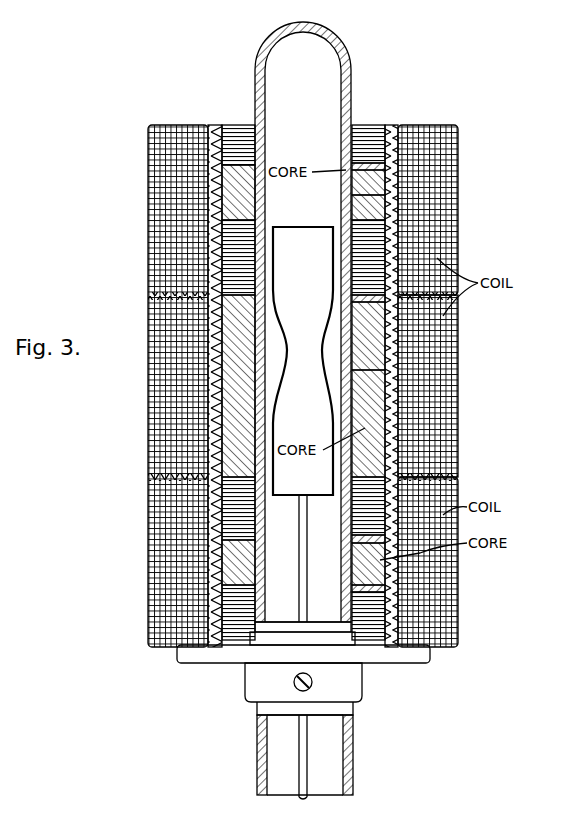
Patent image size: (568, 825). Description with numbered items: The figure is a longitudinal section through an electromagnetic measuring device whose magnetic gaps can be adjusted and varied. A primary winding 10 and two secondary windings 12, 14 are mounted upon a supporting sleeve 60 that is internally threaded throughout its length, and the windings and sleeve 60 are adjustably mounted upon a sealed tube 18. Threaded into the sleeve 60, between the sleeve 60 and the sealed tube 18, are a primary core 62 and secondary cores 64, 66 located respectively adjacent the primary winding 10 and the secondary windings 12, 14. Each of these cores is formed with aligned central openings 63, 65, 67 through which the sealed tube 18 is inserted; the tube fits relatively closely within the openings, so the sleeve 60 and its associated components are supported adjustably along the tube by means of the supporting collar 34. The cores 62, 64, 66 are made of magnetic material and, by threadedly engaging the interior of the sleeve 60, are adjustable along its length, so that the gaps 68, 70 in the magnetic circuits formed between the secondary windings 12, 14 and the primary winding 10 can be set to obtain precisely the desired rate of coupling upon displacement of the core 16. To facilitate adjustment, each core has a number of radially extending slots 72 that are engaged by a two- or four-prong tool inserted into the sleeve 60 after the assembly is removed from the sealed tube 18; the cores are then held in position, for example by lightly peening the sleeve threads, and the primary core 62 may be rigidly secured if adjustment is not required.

The primary winding 10 is at (458, 397).
The secondary winding 12 is at (457, 212).
The secondary winding 14 is at (458, 578).
The core 16 is at (283, 236).
The sealed tube 18 is at (351, 73).
The supporting collar 34 is at (363, 687).
The supporting sleeve 60 is at (388, 128).
The primary core 62 is at (362, 328).
The central opening 63 is at (356, 385).
The secondary core 64 is at (347, 189).
The central opening 65 is at (356, 200).
The secondary core 66 is at (366, 532).
The central opening 67 is at (372, 560).
The gap 68 is at (345, 255).
The gap 70 is at (360, 505).
The slots 72 is at (343, 163).